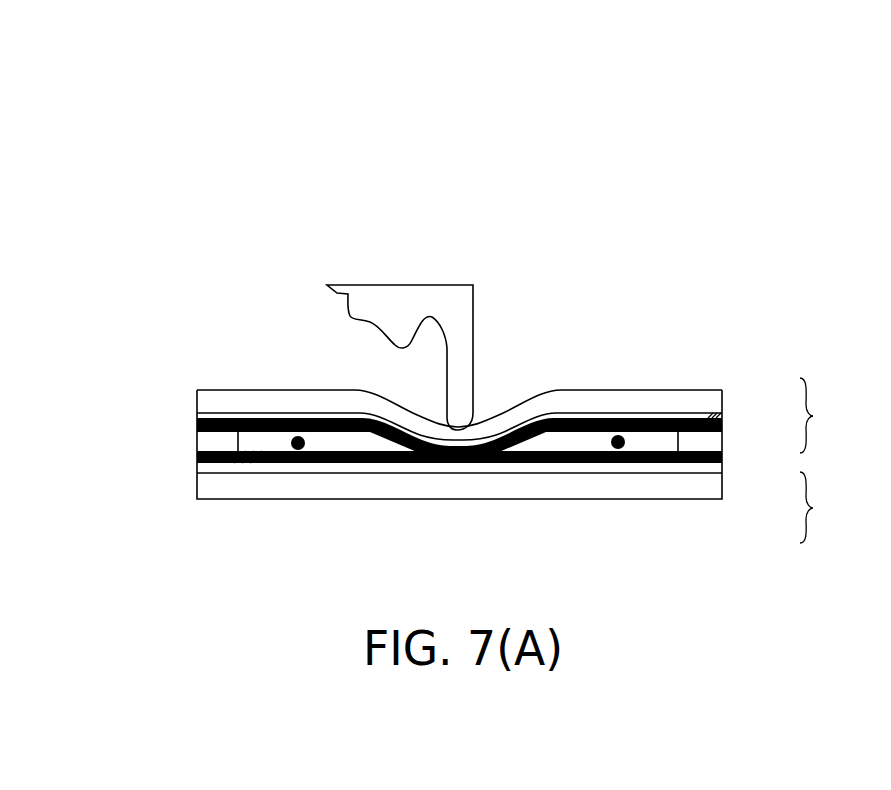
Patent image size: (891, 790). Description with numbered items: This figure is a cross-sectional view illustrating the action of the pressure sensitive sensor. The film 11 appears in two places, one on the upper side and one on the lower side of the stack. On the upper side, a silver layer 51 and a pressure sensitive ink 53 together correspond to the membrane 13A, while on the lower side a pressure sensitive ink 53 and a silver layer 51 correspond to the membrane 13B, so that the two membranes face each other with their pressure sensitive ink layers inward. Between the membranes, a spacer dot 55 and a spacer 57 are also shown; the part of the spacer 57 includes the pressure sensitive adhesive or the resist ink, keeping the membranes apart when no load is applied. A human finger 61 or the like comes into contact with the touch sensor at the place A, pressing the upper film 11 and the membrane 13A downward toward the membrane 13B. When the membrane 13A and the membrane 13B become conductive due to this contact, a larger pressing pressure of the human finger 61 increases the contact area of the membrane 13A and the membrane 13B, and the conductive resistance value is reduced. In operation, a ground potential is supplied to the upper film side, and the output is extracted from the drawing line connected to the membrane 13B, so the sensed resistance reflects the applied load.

The film 11 is at (208, 402).
The silver layer 51 is at (722, 416).
The pressure sensitive ink 53 is at (722, 424).
The spacer dot 55 is at (294, 444).
The spacer 57 is at (208, 443).
The human finger 61 is at (458, 317).
The place A is at (477, 425).
The membrane 13A is at (835, 415).
The membrane 13B is at (835, 507).